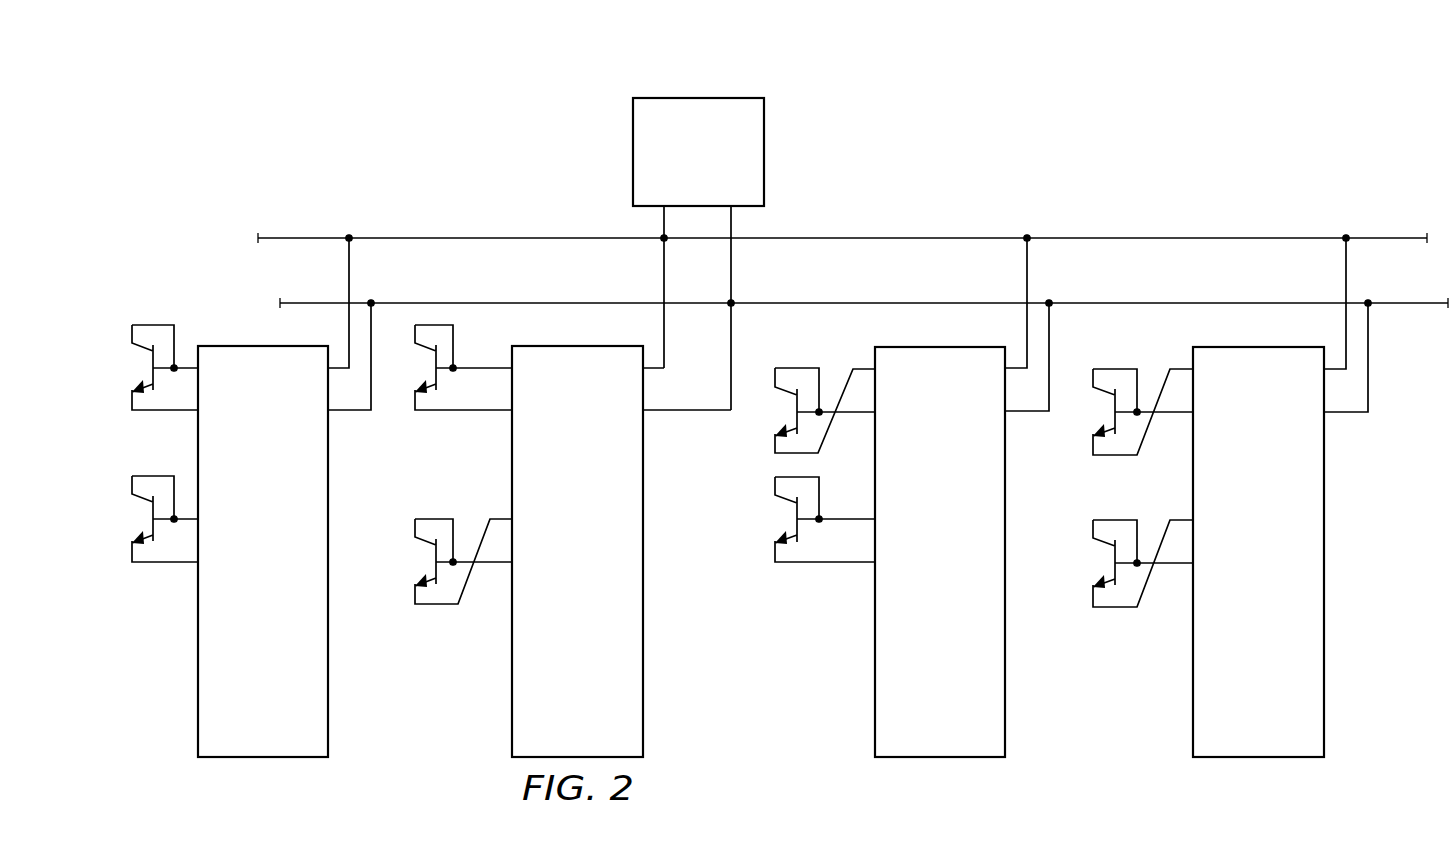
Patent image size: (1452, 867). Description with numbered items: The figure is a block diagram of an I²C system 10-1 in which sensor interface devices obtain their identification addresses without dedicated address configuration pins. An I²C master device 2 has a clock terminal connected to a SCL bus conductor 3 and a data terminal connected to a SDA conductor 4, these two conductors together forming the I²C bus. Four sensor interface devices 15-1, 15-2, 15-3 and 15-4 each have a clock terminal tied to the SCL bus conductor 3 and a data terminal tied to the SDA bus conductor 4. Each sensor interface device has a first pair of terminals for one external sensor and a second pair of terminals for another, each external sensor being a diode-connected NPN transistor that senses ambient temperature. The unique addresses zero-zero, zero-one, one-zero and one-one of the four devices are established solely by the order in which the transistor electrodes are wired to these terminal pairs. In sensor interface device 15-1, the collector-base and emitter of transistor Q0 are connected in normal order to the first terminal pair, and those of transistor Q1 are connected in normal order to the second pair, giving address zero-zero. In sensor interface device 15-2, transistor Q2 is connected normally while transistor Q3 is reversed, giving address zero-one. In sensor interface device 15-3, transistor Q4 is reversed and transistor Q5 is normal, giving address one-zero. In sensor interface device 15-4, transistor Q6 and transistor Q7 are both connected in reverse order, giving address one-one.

The I²C system 10-1 is at (384, 135).
The I²C master device 2 is at (633, 152).
The SCL bus conductor 3 is at (1215, 238).
The SDA bus conductor 4 is at (1193, 303).
The sensor interface device 15-1 is at (287, 732).
The sensor interface device 15-2 is at (601, 732).
The sensor interface device 15-3 is at (964, 732).
The sensor interface device 15-4 is at (1282, 732).
The NPN transistor Q0 is at (155, 367).
The NPN transistor Q1 is at (155, 519).
The NPN transistor Q2 is at (452, 367).
The NPN transistor Q3 is at (452, 561).
The NPN transistor Q4 is at (813, 410).
The NPN transistor Q5 is at (813, 519).
The NPN transistor Q6 is at (1131, 412).
The NPN transistor Q7 is at (1131, 563).